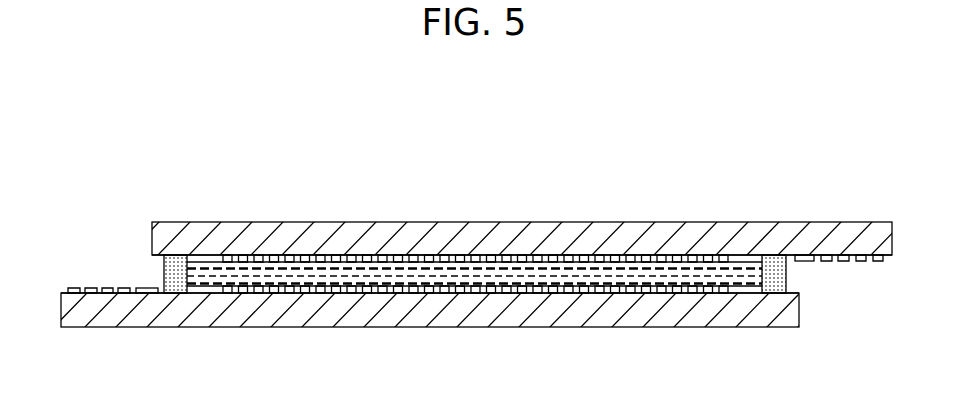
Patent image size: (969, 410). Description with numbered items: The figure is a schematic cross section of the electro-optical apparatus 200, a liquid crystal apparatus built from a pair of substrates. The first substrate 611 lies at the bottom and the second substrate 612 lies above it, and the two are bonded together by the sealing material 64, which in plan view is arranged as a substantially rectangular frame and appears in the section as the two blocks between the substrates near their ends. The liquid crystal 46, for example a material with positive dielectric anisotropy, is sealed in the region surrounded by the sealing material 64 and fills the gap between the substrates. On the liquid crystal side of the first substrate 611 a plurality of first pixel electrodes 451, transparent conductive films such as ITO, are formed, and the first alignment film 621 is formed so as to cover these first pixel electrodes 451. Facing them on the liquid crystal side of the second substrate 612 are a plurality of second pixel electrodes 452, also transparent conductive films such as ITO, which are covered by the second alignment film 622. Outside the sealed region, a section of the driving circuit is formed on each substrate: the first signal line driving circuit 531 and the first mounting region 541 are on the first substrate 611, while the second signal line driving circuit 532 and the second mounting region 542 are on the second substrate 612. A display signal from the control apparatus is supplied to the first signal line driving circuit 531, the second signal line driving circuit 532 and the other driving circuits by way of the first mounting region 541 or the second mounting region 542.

The electro-optical apparatus 200 is at (611, 113).
The second substrate 612 is at (350, 237).
The second alignment film 622 is at (208, 255).
The first substrate 611 is at (572, 317).
The first alignment film 621 is at (735, 291).
The sealing material 64 is at (777, 257).
The second pixel electrodes 452 is at (583, 258).
The first pixel electrodes 451 is at (393, 293).
The liquid crystal 46 is at (483, 279).
The first signal line driving circuit 531 is at (147, 287).
The first mounting region 541 is at (70, 283).
The second signal line driving circuit 532 is at (807, 262).
The second mounting region 542 is at (824, 268).